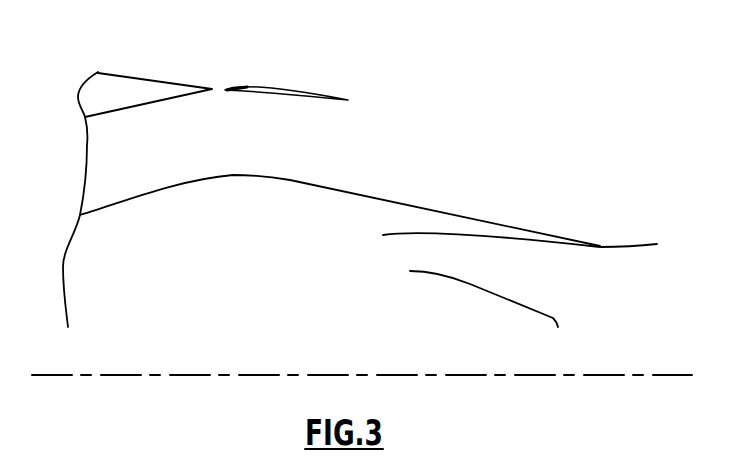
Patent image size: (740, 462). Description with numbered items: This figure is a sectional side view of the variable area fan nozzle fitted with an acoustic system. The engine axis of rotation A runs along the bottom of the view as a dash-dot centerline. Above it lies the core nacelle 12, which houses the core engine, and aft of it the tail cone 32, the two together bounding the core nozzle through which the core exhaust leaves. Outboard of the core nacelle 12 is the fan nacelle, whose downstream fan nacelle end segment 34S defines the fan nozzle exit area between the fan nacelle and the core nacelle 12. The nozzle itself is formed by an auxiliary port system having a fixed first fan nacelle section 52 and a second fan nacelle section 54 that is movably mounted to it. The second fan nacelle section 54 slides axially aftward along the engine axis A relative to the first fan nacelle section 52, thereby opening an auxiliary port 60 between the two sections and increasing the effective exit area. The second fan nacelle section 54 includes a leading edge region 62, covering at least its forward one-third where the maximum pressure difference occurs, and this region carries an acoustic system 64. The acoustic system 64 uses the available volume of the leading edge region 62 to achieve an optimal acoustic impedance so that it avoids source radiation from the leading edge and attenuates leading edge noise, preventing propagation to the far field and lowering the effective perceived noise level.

The core nacelle 12 is at (338, 192).
The tail cone 32 is at (505, 308).
The fan nacelle end segment 34S is at (350, 101).
The first fan nacelle section 52 is at (148, 78).
The second fan nacelle section 54 is at (308, 88).
The auxiliary port 60 is at (215, 97).
The leading edge region 62 is at (243, 86).
The acoustic system 64 is at (243, 92).
The engine axis of rotation A is at (641, 375).